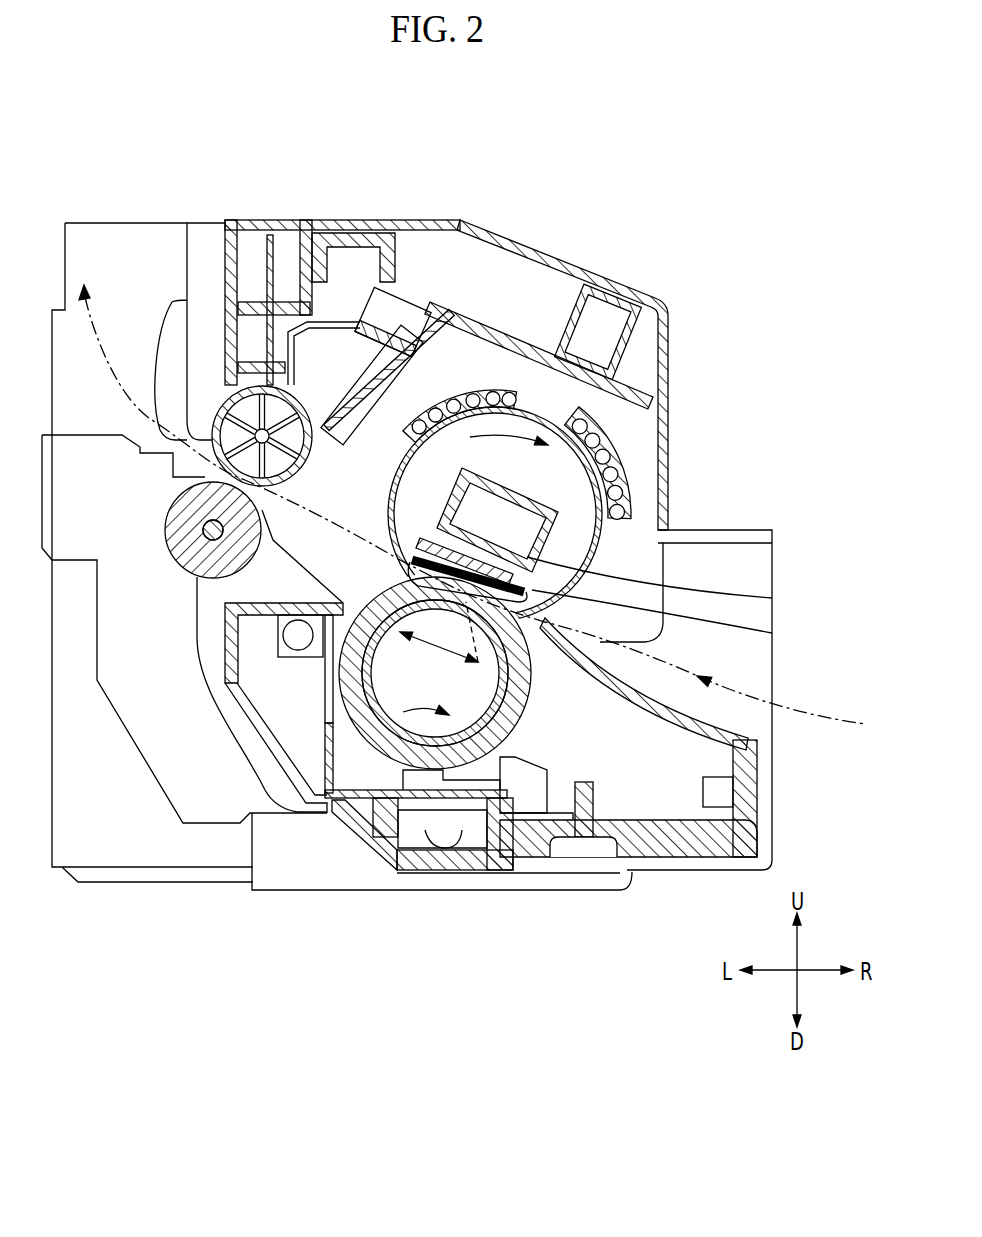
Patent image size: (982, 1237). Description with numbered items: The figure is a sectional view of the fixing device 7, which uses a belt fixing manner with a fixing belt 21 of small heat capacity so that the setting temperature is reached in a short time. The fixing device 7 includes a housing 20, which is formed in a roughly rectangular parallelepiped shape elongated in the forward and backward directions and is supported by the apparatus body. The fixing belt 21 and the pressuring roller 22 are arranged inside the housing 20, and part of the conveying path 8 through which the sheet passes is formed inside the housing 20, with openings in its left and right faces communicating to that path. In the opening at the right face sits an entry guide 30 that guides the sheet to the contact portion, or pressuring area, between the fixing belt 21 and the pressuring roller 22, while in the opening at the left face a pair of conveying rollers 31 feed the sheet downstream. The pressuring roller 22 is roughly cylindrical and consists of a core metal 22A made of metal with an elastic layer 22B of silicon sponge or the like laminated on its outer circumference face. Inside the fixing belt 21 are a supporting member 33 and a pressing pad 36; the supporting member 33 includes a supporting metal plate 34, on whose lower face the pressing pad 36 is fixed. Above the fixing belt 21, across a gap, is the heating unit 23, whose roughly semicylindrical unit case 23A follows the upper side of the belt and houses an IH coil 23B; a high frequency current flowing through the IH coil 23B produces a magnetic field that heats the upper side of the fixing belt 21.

The fixing device 7 is at (363, 166).
The conveying path 8 is at (865, 724).
The housing 20 is at (668, 352).
The fixing belt 21 is at (603, 528).
The pressuring roller 22 is at (488, 673).
The core metal 22A is at (488, 722).
The elastic layer 22B is at (482, 730).
The heating unit 23 is at (590, 454).
The unit case 23A is at (633, 482).
The IH coil 23B is at (605, 432).
The entry guide 30 is at (750, 739).
The conveying rollers 31 is at (170, 482).
The supporting member 33 is at (636, 575).
The supporting metal plate 34 is at (772, 598).
The pressing pad 36 is at (772, 633).